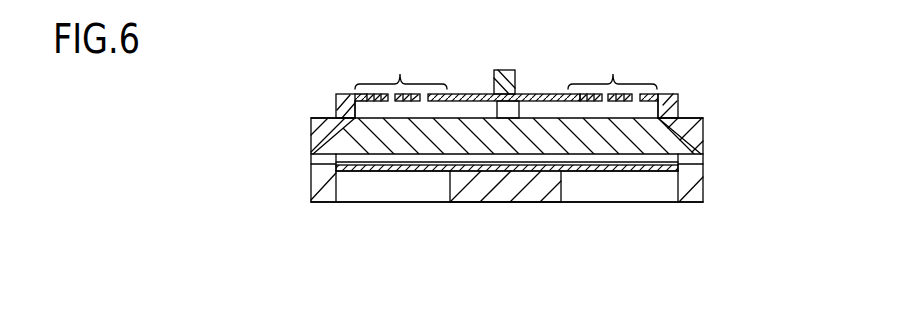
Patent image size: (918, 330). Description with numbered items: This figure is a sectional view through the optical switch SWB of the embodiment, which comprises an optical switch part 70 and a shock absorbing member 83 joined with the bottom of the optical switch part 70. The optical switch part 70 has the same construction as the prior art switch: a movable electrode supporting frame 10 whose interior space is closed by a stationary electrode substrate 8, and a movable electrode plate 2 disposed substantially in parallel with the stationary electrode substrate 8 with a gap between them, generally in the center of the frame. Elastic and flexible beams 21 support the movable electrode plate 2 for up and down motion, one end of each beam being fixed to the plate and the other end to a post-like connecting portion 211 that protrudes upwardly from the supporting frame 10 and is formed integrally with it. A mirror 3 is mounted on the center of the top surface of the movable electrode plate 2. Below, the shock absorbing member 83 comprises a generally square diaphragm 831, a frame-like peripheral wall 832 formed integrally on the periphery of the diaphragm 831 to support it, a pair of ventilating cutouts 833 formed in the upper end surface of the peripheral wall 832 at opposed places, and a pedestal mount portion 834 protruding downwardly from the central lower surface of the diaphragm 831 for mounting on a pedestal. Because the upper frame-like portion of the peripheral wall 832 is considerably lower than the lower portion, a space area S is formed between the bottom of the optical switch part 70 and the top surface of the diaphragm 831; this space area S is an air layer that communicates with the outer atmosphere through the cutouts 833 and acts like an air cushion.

The optical switch SWB is at (538, 26).
The movable electrode plate 2 is at (506, 69).
The elastic and flexible beams 21 is at (470, 93).
The post-like connecting portion 211 is at (343, 93).
The mirror 3 is at (517, 68).
The stationary electrode substrate 8 is at (393, 143).
The movable electrode supporting frame 10 is at (704, 119).
The optical switch part 70 is at (298, 115).
The shock absorbing member 83 is at (565, 229).
The diaphragm 831 is at (423, 173).
The frame-like peripheral wall 832 is at (690, 204).
The ventilating cutouts 833 is at (322, 160).
The pedestal mount portion 834 is at (543, 193).
The space area S is at (613, 163).